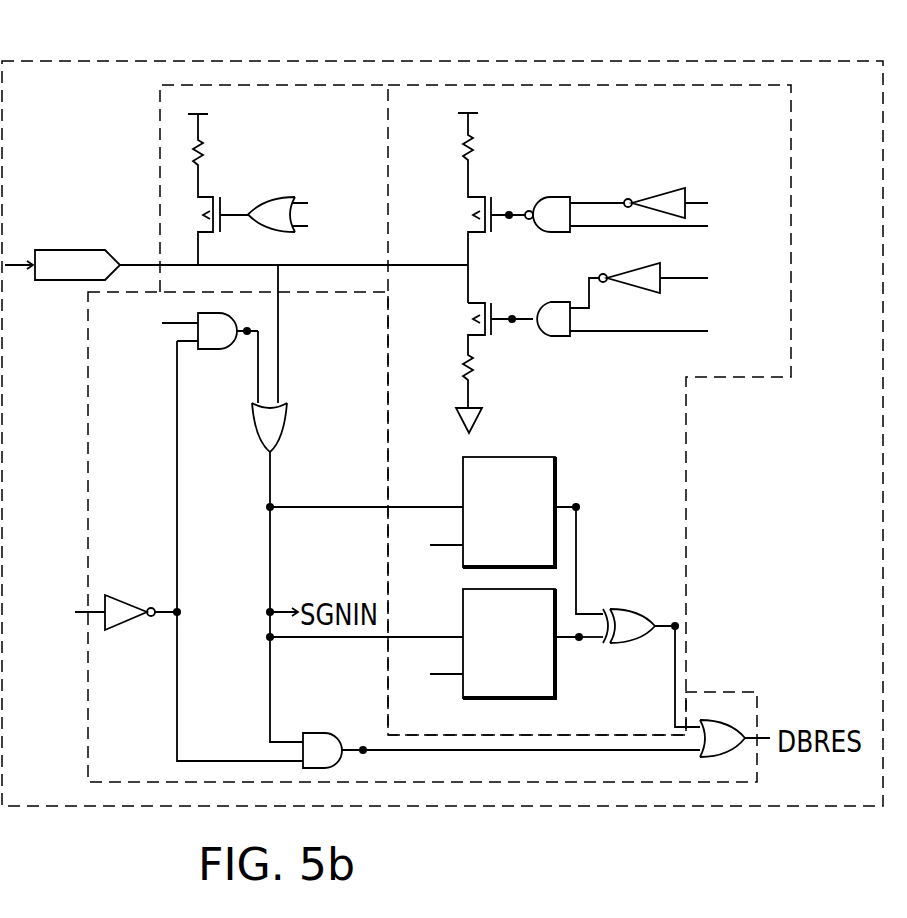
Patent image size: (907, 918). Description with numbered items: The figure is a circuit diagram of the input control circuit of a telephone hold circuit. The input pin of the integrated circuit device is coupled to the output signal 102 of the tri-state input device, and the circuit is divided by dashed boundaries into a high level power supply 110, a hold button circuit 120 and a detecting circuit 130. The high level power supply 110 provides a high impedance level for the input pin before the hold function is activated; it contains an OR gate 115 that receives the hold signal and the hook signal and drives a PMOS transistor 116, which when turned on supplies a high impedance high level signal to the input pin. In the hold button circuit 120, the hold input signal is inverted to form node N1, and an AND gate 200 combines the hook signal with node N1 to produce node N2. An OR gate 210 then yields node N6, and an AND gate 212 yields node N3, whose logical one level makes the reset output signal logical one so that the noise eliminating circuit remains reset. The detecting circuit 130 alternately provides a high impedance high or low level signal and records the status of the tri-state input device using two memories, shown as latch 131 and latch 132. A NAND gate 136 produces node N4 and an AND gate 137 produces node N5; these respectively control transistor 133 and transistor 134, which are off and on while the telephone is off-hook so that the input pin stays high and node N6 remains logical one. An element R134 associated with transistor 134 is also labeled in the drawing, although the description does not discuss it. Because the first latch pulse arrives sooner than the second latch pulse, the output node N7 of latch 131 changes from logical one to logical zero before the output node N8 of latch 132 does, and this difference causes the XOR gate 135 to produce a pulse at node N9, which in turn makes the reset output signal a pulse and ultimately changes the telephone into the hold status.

The output signal 102 is at (2, 228).
The high level power supply 110 is at (298, 102).
The OR gate 115 is at (282, 193).
The PMOS transistor 116 is at (215, 193).
The hold button circuit 120 is at (125, 722).
The detecting circuit 130 is at (690, 102).
The latch 131 is at (557, 468).
The latch 132 is at (460, 688).
The transistor 133 is at (488, 193).
The transistor 134 is at (490, 338).
The resistor R134 is at (449, 370).
The XOR gate 135 is at (612, 607).
The NAND gate 136 is at (567, 194).
The AND gate 137 is at (563, 338).
The AND gate 200 is at (210, 350).
The OR gate 210 is at (288, 413).
The AND gate 212 is at (320, 735).
The node N1 is at (178, 610).
The node N2 is at (250, 328).
The node N3 is at (363, 748).
The node N4 is at (509, 213).
The node N5 is at (512, 317).
The node N6 is at (273, 503).
The output node N7 is at (578, 505).
The output node N8 is at (580, 640).
The node N9 is at (676, 624).